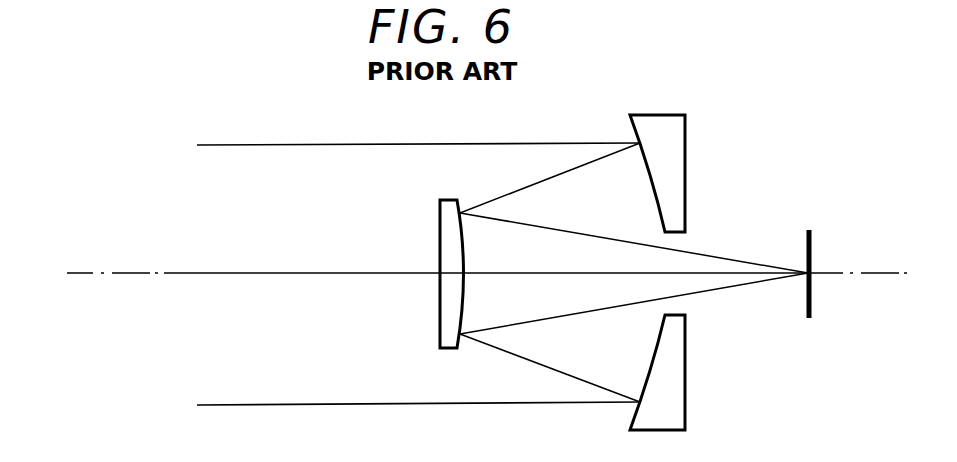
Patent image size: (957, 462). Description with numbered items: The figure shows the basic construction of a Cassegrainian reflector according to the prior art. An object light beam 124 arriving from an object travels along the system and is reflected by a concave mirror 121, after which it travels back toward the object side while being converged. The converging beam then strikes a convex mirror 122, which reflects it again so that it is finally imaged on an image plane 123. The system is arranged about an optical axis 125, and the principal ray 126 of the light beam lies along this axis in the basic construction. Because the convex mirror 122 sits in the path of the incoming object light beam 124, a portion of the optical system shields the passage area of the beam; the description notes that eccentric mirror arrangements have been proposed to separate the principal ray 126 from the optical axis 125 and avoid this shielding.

The concave mirror 121 is at (662, 115).
The convex mirror 122 is at (440, 200).
The image plane 123 is at (811, 238).
The object light beam 124 is at (236, 145).
The optical axis 125 is at (90, 273).
The principal ray 126 is at (234, 273).